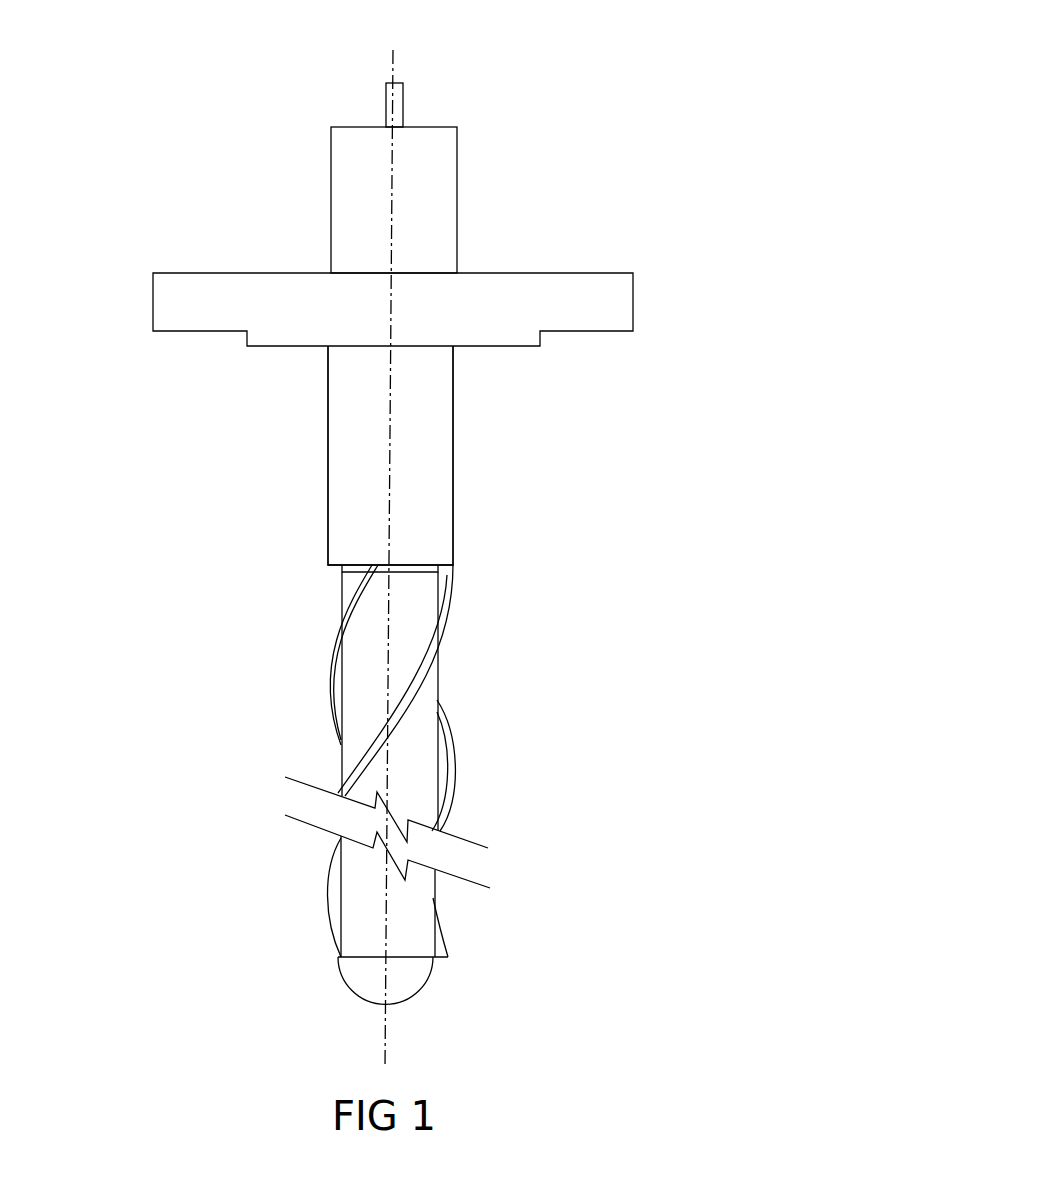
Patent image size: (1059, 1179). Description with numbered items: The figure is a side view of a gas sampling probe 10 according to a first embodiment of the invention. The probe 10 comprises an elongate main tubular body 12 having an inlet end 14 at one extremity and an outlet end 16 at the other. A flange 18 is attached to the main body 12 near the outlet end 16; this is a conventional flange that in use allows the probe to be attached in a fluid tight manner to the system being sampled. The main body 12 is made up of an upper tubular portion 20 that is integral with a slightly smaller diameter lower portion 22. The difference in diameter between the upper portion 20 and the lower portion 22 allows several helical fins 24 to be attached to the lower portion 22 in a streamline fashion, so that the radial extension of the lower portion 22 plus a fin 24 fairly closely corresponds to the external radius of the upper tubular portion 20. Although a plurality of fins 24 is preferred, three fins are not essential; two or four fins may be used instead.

The gas sampling probe 10 is at (214, 562).
The main tubular body 12 is at (453, 522).
The inlet end 14 is at (314, 1032).
The outlet end 16 is at (474, 73).
The flange 18 is at (633, 302).
The upper tubular portion 20 is at (420, 418).
The lower portion 22 is at (419, 645).
The helical fins 24 is at (327, 685).